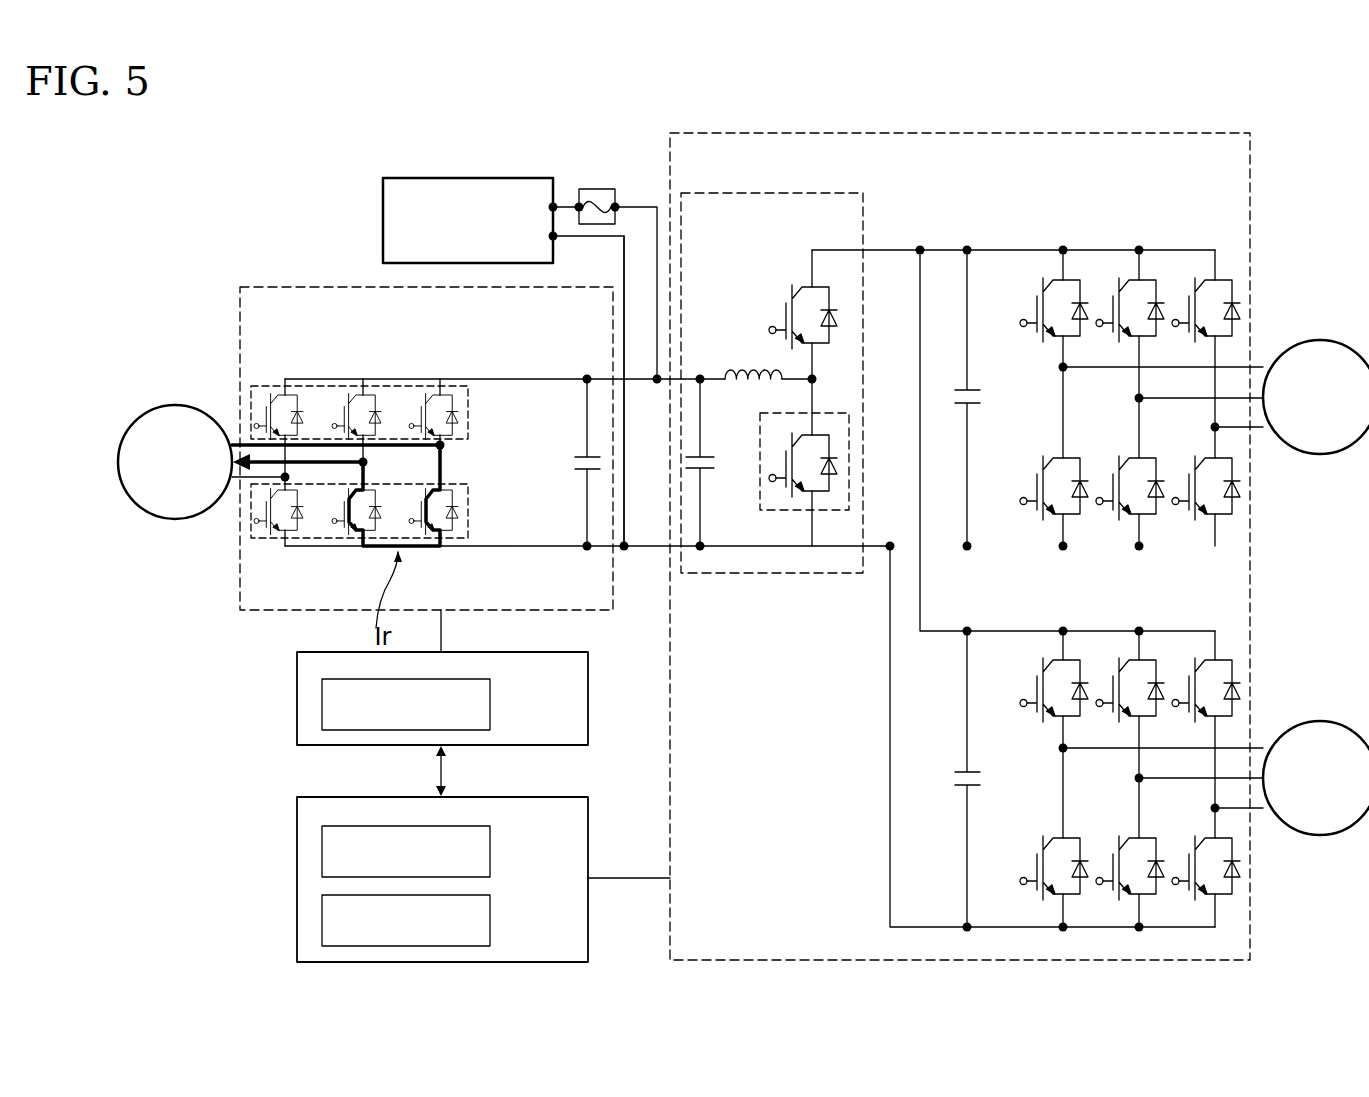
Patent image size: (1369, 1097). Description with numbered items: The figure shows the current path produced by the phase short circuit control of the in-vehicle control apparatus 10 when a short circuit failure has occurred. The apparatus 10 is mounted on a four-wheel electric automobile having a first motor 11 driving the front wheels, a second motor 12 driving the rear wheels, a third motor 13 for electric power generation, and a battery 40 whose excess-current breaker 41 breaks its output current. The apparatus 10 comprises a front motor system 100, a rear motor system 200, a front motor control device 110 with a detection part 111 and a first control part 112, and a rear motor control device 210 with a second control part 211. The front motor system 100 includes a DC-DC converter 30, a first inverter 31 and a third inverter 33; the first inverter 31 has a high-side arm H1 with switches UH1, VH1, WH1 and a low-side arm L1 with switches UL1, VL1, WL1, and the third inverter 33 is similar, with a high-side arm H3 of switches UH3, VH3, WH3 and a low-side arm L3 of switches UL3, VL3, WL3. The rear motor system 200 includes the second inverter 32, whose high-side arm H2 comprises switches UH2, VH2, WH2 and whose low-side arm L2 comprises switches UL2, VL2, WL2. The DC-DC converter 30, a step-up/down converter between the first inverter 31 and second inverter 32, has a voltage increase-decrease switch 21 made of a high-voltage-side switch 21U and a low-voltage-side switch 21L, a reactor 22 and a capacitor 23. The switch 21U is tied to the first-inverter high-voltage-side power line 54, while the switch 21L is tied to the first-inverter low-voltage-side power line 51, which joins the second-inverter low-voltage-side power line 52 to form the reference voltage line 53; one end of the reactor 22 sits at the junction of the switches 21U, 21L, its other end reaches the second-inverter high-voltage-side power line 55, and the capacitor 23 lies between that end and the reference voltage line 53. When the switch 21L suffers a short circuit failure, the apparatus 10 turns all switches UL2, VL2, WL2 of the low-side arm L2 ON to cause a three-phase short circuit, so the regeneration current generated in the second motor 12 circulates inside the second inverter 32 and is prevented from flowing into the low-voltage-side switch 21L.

The in-vehicle control apparatus 10 is at (1263, 158).
The first motor 11 is at (1322, 719).
The second motor 12 is at (140, 408).
The third motor 13 is at (1318, 338).
The voltage increase-decrease switch 21 is at (822, 458).
The high-voltage-side switch 21U is at (833, 348).
The low-voltage-side switch 21L is at (833, 498).
The reactor 22 is at (750, 360).
The capacitor 23 is at (717, 462).
The DC-DC converter 30 is at (765, 191).
The first inverter 31 is at (1147, 739).
The second inverter 32 is at (238, 330).
The third inverter 33 is at (1148, 358).
The battery 40 is at (447, 177).
The excess-current breaker 41 is at (597, 188).
The first-inverter low-voltage-side power line 51 is at (905, 925).
The second-inverter low-voltage-side power line 52 is at (555, 548).
The reference voltage line 53 is at (650, 550).
The first-inverter high-voltage-side power line 54 is at (890, 248).
The second-inverter high-voltage-side power line 55 is at (532, 377).
The front motor system 100 is at (1253, 920).
The front motor control device 110 is at (404, 879).
The detection part 111 is at (492, 858).
The first control part 112 is at (492, 923).
The rear motor system 200 is at (268, 618).
The rear motor control device 210 is at (404, 698).
The second control part 211 is at (492, 705).
The high-side arm H1 is at (1120, 680).
The low-side arm L1 is at (1115, 837).
The high-side arm H2 is at (320, 407).
The low-side arm L2 is at (318, 519).
The high-side arm H3 is at (1120, 298).
The low-side arm L3 is at (1116, 456).
The high-side U-phase switch UH1 is at (1035, 662).
The high-side V-phase switch VH1 is at (1111, 662).
The high-side W-phase switch WH1 is at (1195, 703).
The low-side U-phase switch UL1 is at (1035, 848).
The low-side V-phase switch VL1 is at (1111, 848).
The low-side W-phase switch WL1 is at (1193, 867).
The high-side U-phase switch UH2 is at (307, 397).
The high-side V-phase switch VH2 is at (385, 397).
The high-side W-phase switch WH2 is at (462, 397).
The low-side U-phase switch UL2 is at (265, 534).
The low-side V-phase switch VL2 is at (342, 535).
The low-side W-phase switch WL2 is at (419, 535).
The high-side U-phase switch UH3 is at (1035, 282).
The high-side V-phase switch VH3 is at (1111, 282).
The high-side W-phase switch WH3 is at (1195, 322).
The low-side U-phase switch UL3 is at (1035, 460).
The low-side V-phase switch VL3 is at (1111, 460).
The low-side W-phase switch WL3 is at (1193, 482).